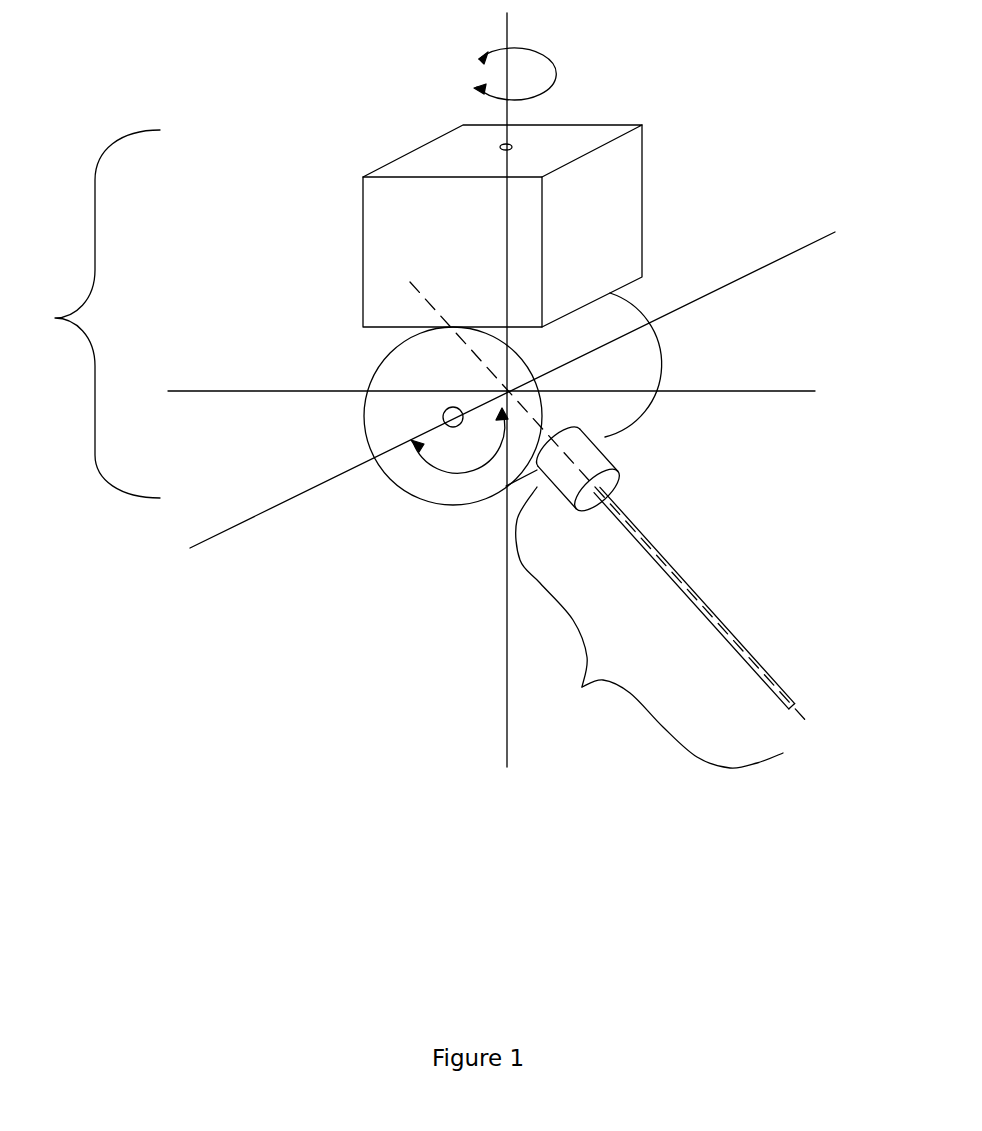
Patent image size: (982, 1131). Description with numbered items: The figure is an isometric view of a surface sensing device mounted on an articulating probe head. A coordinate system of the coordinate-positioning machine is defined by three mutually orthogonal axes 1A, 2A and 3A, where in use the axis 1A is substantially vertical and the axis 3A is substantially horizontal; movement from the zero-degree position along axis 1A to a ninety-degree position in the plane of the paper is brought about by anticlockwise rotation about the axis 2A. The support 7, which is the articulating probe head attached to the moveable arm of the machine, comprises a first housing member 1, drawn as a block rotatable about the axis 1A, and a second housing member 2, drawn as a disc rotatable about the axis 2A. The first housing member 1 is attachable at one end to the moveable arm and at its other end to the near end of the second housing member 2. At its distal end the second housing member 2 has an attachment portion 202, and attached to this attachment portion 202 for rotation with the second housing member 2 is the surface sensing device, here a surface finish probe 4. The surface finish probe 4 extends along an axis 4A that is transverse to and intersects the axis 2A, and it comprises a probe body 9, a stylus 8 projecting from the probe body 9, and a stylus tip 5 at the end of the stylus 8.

The first housing member 1 is at (382, 277).
The second housing member 2 is at (415, 360).
The support 7 is at (94, 314).
The surface finish probe 4 is at (649, 627).
The stylus tip 5 is at (799, 690).
The stylus 8 is at (683, 553).
The probe body 9 is at (610, 460).
The attachment portion 202 is at (588, 425).
The axis 1A is at (514, 410).
The axis 2A is at (491, 404).
The axis 3A is at (512, 392).
The axis 4A is at (624, 514).